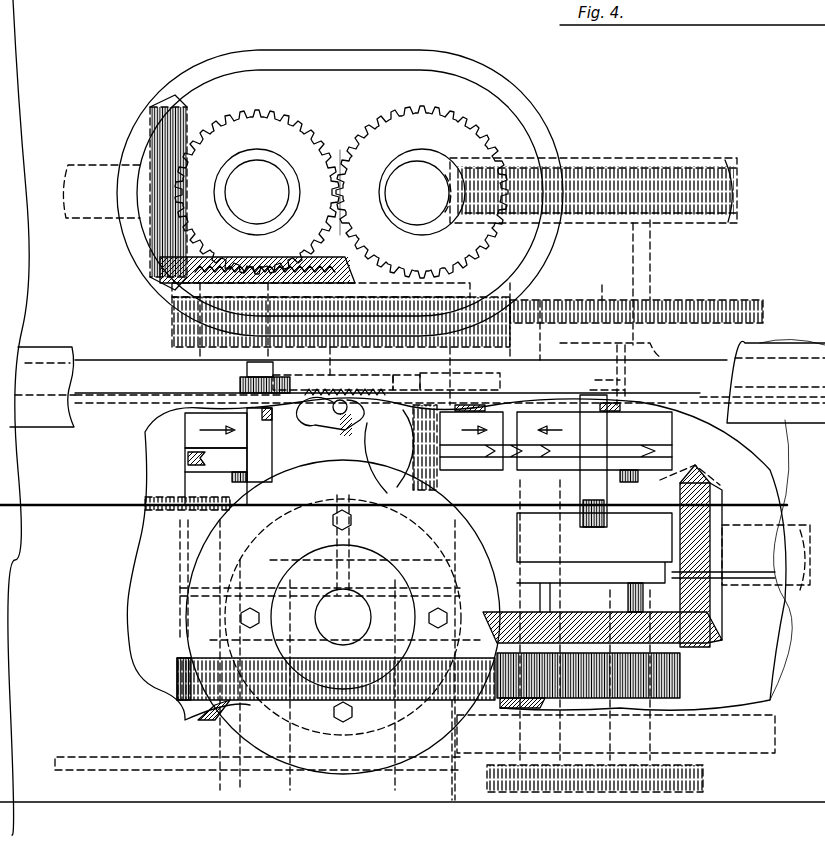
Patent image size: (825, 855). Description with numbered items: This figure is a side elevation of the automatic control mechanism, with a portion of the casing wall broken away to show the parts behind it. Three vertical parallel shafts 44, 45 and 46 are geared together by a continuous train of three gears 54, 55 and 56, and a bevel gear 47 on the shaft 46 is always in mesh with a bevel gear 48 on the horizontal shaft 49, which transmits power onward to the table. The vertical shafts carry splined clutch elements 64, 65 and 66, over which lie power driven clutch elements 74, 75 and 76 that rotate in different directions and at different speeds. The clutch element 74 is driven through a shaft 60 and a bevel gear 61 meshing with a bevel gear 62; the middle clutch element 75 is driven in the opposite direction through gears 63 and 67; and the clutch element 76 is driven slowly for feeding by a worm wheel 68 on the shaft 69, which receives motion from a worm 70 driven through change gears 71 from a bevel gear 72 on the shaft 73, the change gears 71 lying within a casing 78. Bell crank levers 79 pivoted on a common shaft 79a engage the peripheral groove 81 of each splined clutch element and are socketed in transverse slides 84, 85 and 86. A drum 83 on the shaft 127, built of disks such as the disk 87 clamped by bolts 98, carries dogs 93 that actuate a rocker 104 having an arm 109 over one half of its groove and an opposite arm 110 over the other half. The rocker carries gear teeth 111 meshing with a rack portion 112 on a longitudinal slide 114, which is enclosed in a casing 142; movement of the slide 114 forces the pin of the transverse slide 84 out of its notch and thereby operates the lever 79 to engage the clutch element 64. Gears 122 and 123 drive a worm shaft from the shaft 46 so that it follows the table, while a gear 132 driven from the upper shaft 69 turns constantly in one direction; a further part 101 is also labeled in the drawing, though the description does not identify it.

The vertical shaft 44 is at (235, 770).
The vertical shaft 45 is at (452, 772).
The vertical shaft 46 is at (640, 737).
The bevel gear 47 is at (695, 652).
The bevel gear 48 is at (722, 626).
The horizontal shaft 49 is at (787, 560).
The gear 54 is at (176, 672).
The gear 55 is at (385, 724).
The gear 56 is at (530, 710).
The shaft 60 is at (90, 165).
The bevel gear 61 is at (145, 250).
The bevel gear 62 is at (160, 300).
The gear 63 is at (170, 332).
The splined clutch element 64 is at (215, 470).
The splined clutch element 65 is at (475, 472).
The splined clutch element 66 is at (524, 472).
The gear 67 is at (384, 300).
The worm wheel 68 is at (722, 158).
The shaft 69 is at (640, 256).
The worm 70 is at (442, 215).
The change gears 71 is at (362, 134).
The bevel gear 72 is at (418, 178).
The shaft 73 is at (250, 178).
The power driven clutch element 74 is at (185, 438).
The power driven clutch element 75 is at (400, 470).
The power driven clutch element 76 is at (672, 438).
The casing 78 is at (512, 90).
The bell crank lever 79 is at (473, 420).
The common shaft 79a is at (165, 512).
The peripheral groove 81 is at (716, 466).
The drum 83 is at (188, 640).
The transverse slide 84 is at (246, 370).
The transverse slide 85 is at (450, 373).
The transverse slide 86 is at (625, 376).
The disk 87 is at (185, 613).
The dog 93 is at (330, 425).
The clamping bolt 98 is at (240, 613).
The shaft 101 is at (592, 285).
The rocker element 104 is at (330, 470).
The arm 109 is at (352, 522).
The arm 110 is at (337, 545).
The gear teeth 111 is at (314, 395).
The rack portion 112 is at (366, 395).
The longitudinal slide 114 is at (168, 388).
The gear 122 is at (662, 804).
The gear 123 is at (706, 777).
The shaft 127 is at (343, 617).
The gear 132 is at (710, 300).
The casing 142 is at (795, 345).